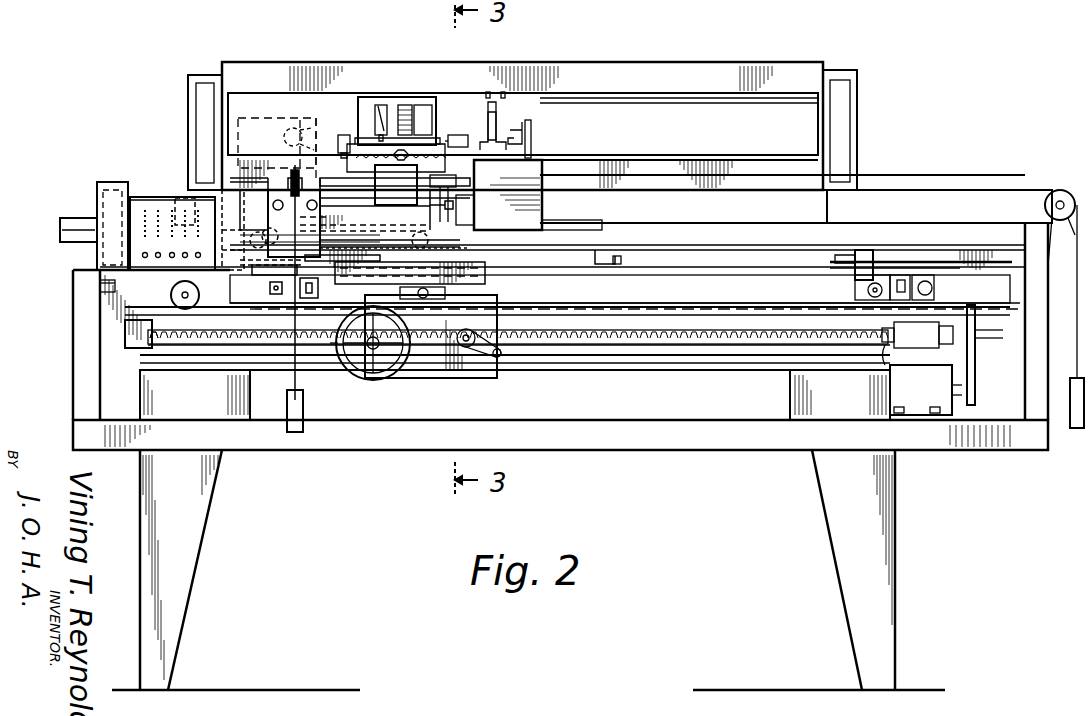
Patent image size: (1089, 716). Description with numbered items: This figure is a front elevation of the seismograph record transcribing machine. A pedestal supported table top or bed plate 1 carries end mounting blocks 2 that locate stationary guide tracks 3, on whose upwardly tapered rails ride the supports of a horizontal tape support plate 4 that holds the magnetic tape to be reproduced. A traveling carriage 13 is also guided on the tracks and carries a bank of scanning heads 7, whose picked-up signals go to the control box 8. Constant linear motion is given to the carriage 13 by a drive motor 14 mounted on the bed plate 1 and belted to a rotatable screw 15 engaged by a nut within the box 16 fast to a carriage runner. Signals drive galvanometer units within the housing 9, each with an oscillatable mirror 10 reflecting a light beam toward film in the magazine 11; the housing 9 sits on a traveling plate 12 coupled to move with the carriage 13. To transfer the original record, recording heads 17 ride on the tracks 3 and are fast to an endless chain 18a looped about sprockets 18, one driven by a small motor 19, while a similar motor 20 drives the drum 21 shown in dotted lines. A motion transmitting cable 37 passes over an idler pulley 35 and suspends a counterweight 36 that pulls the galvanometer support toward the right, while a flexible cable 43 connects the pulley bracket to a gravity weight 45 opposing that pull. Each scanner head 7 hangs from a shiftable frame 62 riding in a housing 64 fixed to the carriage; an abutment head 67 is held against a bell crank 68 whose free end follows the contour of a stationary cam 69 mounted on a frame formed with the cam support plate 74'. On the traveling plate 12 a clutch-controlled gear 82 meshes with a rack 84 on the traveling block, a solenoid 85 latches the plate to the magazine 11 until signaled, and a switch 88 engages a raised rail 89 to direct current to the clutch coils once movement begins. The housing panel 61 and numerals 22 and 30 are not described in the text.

The table top or bed plate 1 is at (590, 448).
The end mounting blocks 2 is at (140, 392).
The stationary guide tracks 3 is at (680, 372).
The tape support plate 4 is at (940, 250).
The scanning heads 7 is at (622, 260).
The control box 8 is at (160, 196).
The galvanometer housing 9 is at (425, 105).
The oscillatable mirror 10 is at (406, 108).
The film magazine 11 is at (673, 62).
The traveling plate 12 is at (370, 130).
The traveling carriage 13 is at (530, 290).
The drive motor 14 is at (930, 397).
The rotatable screw 15 is at (627, 342).
The nut box 16 is at (428, 365).
The recording heads 17 is at (860, 250).
The fixed sprockets 18 is at (168, 289).
The endless chain 18a is at (700, 283).
The electric motor 19 is at (185, 310).
The drum motor 20 is at (58, 225).
The drum 21 is at (96, 190).
The roller 22 is at (932, 288).
The switch 30 is at (902, 275).
The idler pulley 35 is at (1055, 190).
The counterweight 36 is at (1077, 428).
The motion transmitting cable 37 is at (968, 190).
The flexible cable 43 is at (288, 380).
The gravity weight 45 is at (303, 398).
The housing panel 61 is at (760, 133).
The shiftable frame 62 is at (600, 222).
The housing 64 is at (542, 192).
The abutment head 67 is at (510, 128).
The bell crank 68 is at (531, 140).
The cam 69 is at (277, 148).
The cam support plate 74' is at (478, 201).
The rotatable gear 82 is at (403, 150).
The rack 84 is at (398, 165).
The solenoid 85 is at (338, 138).
The switch 88 is at (470, 135).
The raised rail 89 is at (635, 155).